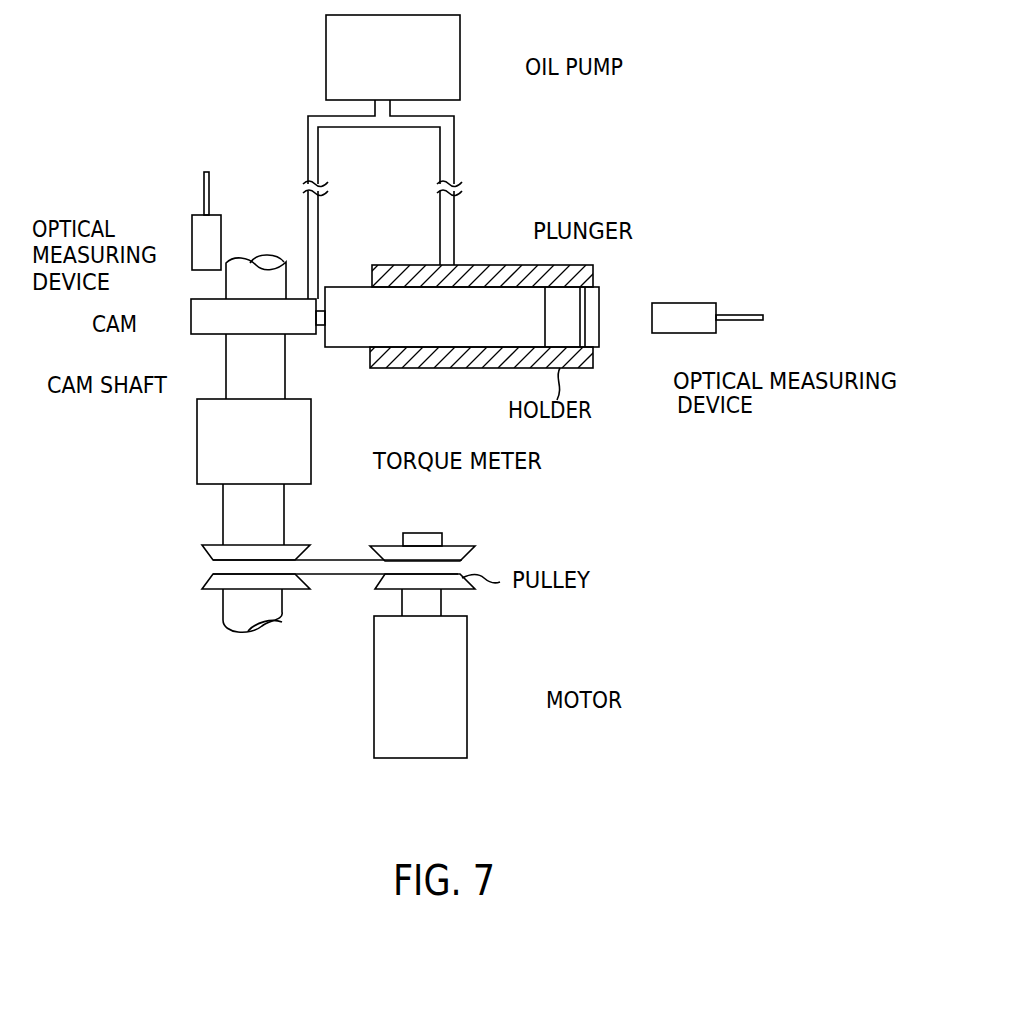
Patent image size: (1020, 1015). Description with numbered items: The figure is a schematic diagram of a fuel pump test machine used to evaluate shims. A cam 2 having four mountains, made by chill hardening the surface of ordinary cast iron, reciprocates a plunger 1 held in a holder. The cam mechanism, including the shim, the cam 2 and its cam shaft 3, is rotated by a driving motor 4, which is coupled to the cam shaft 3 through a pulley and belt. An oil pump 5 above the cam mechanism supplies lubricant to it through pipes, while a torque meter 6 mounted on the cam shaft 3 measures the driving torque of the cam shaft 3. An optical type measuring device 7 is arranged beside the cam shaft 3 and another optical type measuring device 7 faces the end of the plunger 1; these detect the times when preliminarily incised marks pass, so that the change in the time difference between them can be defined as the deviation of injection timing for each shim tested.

The plunger 1 is at (517, 310).
The cam 2 is at (192, 320).
The cam shaft 3 is at (235, 387).
The driving motor 4 is at (455, 705).
The oil pump 5 is at (450, 63).
The torque meter 6 is at (305, 462).
The optical type measuring device 7 is at (192, 229).